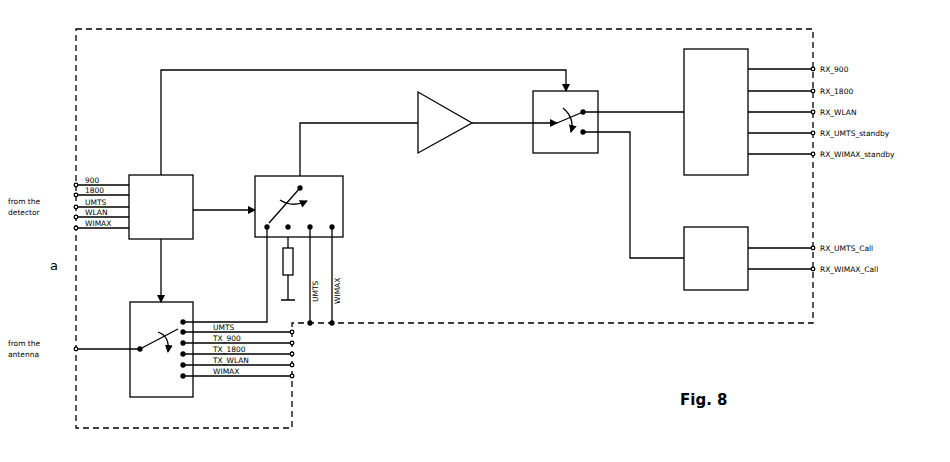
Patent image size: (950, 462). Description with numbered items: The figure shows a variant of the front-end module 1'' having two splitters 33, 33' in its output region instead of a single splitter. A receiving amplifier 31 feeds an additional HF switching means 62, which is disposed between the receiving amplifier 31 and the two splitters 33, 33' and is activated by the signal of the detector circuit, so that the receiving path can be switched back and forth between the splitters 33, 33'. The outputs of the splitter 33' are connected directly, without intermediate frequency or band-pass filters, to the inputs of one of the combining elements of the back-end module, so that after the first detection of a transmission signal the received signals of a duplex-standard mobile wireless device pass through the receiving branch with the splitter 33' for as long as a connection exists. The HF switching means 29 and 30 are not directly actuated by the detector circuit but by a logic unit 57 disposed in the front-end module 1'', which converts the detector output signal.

The front-end module 1'' is at (444, 228).
The logic unit 57 is at (171, 218).
The HF switching means 30 is at (272, 185).
The HF switching means 29 is at (152, 377).
The receiving amplifier 31 is at (441, 131).
The additional HF switching means 62 is at (550, 138).
The splitter 33 is at (716, 112).
The splitter 33' is at (716, 258).